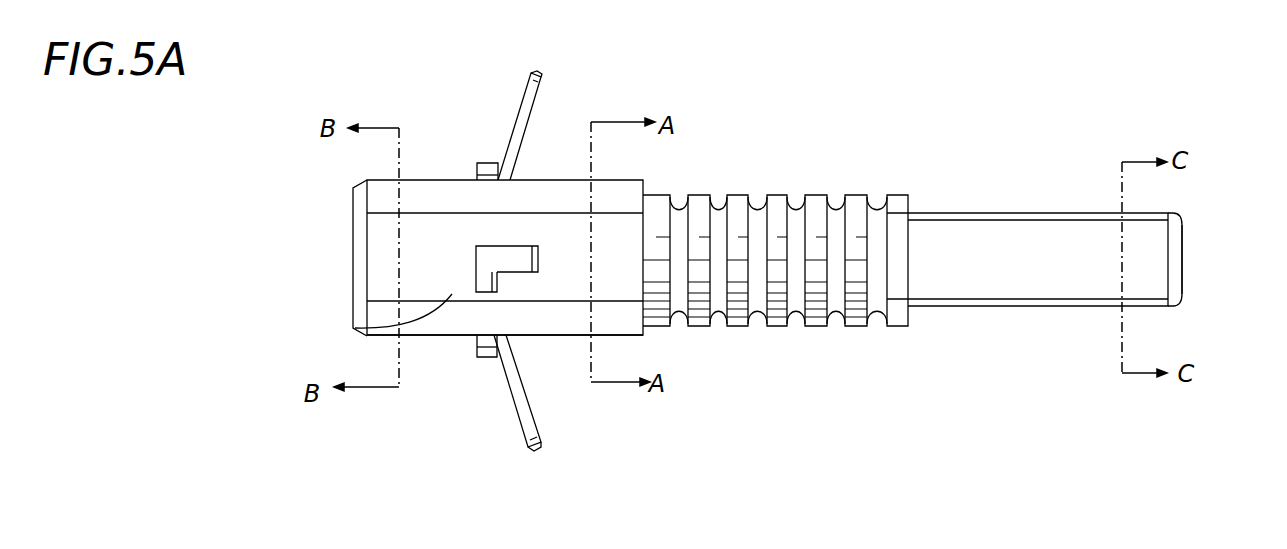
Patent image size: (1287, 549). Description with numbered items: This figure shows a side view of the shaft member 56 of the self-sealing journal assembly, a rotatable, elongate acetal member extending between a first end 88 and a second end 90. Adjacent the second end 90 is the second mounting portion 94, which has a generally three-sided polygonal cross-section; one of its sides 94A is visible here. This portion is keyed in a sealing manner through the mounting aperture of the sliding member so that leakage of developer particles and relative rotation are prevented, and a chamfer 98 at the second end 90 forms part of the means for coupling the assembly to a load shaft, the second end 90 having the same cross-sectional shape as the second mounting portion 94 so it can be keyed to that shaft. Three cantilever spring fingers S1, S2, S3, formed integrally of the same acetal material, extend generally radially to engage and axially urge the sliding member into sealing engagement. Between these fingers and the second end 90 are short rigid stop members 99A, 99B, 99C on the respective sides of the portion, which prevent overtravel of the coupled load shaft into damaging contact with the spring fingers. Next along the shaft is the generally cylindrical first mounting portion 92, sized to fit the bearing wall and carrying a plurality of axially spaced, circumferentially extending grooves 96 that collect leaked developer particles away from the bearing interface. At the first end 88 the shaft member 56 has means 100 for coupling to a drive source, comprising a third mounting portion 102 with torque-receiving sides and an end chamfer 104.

The shaft member 56 is at (877, 190).
The first end 88 is at (1181, 266).
The second end 90 is at (352, 269).
The first mounting portion 92 is at (773, 328).
The second mounting portion 94 is at (555, 338).
The side 94A is at (380, 328).
The grooves 96 is at (758, 208).
The chamfer 98 is at (352, 222).
The stop member 99A is at (500, 280).
The stop member 99B is at (490, 162).
The stop member 99C is at (478, 355).
The means for coupling to a drive source 100 is at (1044, 309).
The third mounting portion 102 is at (988, 278).
The end chamfer 104 is at (1179, 230).
The cantilever spring finger S1 is at (515, 108).
The cantilever spring finger S2 is at (500, 256).
The cantilever spring finger S3 is at (518, 418).